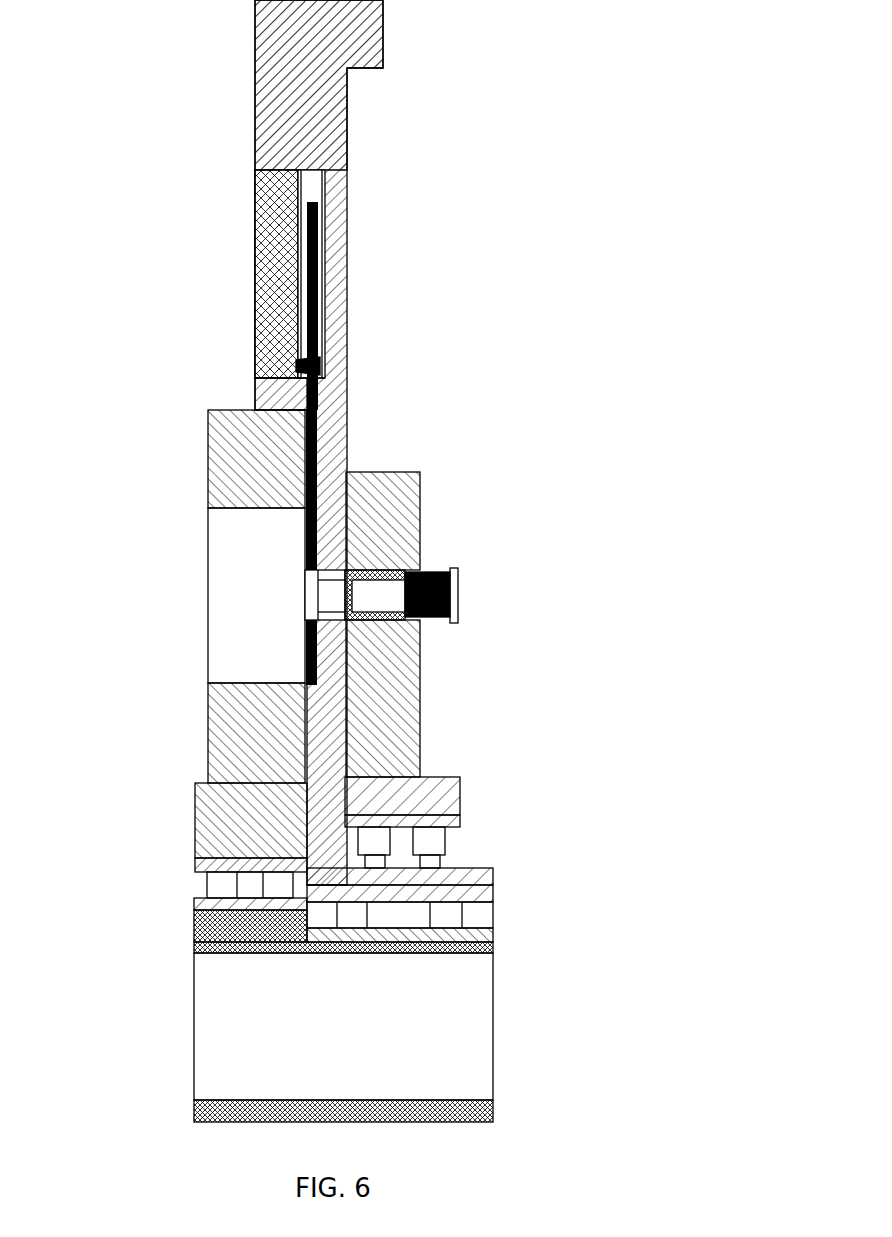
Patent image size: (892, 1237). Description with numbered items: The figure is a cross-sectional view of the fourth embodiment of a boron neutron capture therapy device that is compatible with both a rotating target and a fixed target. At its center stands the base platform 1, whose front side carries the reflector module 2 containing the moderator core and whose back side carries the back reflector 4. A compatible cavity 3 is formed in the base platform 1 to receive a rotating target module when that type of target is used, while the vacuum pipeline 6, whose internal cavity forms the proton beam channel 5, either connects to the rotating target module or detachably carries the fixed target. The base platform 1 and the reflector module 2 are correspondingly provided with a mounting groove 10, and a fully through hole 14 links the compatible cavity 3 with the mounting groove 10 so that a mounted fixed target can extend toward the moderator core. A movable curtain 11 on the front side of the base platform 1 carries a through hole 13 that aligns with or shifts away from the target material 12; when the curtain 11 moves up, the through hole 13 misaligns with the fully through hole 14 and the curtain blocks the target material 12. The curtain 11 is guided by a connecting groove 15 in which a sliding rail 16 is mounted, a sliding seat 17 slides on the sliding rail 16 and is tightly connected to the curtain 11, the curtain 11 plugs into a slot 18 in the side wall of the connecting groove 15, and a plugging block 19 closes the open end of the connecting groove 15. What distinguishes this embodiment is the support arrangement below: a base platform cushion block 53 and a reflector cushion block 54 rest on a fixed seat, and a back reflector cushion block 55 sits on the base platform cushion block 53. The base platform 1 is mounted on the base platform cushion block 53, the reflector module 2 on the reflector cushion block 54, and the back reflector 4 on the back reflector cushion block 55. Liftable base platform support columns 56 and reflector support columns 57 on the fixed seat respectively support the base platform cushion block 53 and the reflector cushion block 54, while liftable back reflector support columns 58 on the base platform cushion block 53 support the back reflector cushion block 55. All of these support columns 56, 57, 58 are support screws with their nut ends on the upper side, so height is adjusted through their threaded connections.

The base platform 1 is at (427, 442).
The reflector module 2 is at (186, 744).
The compatible cavity 3 is at (415, 122).
The back reflector 4 is at (466, 698).
The proton beam channel 5 is at (437, 518).
The vacuum pipeline 6 is at (444, 587).
The mounting groove 10 is at (217, 408).
The curtain 11 is at (186, 586).
The target material 12 is at (206, 585).
The through hole 13 is at (206, 643).
The fully through hole 14 is at (206, 660).
The connecting groove 15 is at (224, 302).
The sliding rail 16 is at (227, 247).
The sliding seat 17 is at (227, 329).
The slot 18 is at (187, 542).
The plugging block 19 is at (214, 217).
The base platform cushion block 53 is at (280, 1010).
The reflector cushion block 54 is at (187, 843).
The back reflector cushion block 55 is at (461, 780).
The base platform support columns 56 is at (460, 897).
The reflector support columns 57 is at (180, 926).
The back reflector support columns 58 is at (442, 851).